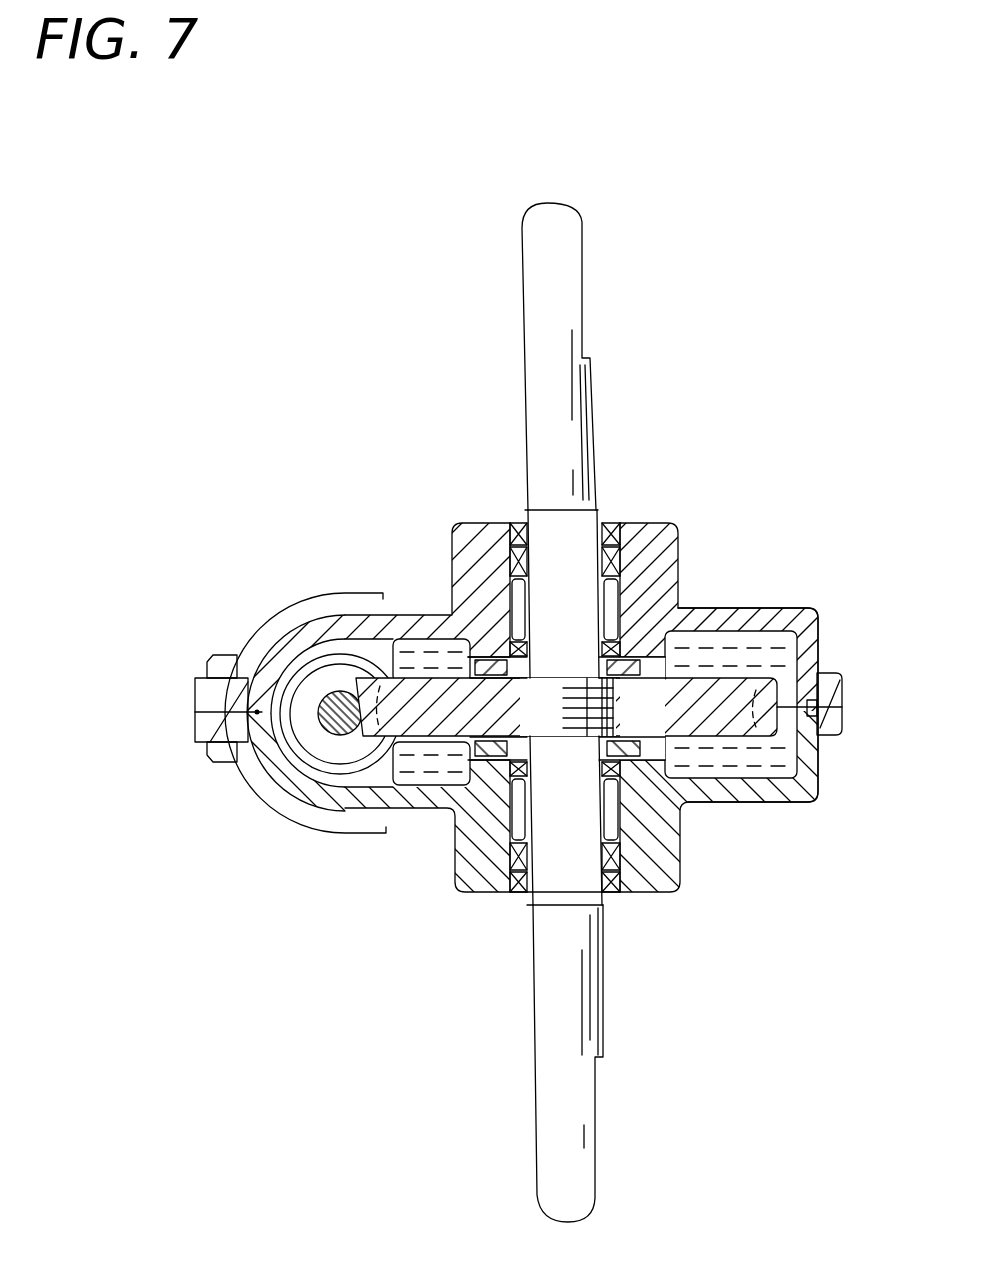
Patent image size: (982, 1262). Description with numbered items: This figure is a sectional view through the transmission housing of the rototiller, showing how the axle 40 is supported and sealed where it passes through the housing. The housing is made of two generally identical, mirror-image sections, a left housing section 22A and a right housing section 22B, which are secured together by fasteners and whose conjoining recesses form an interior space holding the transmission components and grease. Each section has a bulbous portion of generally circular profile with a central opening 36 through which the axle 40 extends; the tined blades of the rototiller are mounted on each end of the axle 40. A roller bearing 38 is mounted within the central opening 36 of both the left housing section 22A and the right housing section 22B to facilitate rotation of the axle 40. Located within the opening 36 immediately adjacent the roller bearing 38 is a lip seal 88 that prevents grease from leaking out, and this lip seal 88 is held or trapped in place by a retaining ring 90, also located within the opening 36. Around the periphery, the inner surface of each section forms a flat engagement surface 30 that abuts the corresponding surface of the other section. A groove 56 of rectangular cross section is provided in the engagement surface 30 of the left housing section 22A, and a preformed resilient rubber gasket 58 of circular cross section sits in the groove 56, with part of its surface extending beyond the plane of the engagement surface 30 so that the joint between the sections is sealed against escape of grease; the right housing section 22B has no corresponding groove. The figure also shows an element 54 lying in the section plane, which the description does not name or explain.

The axle 40 is at (570, 228).
The central opening 36 is at (517, 523).
The roller bearing 38 is at (500, 592).
The lip seal 88 is at (512, 558).
The retaining ring 90 is at (511, 540).
The left housing section 22A is at (753, 803).
The right housing section 22B is at (757, 605).
The pivot pin 54 is at (332, 736).
The groove 56 is at (250, 715).
The gasket 58 is at (247, 678).
The engagement surface 30 is at (842, 685).